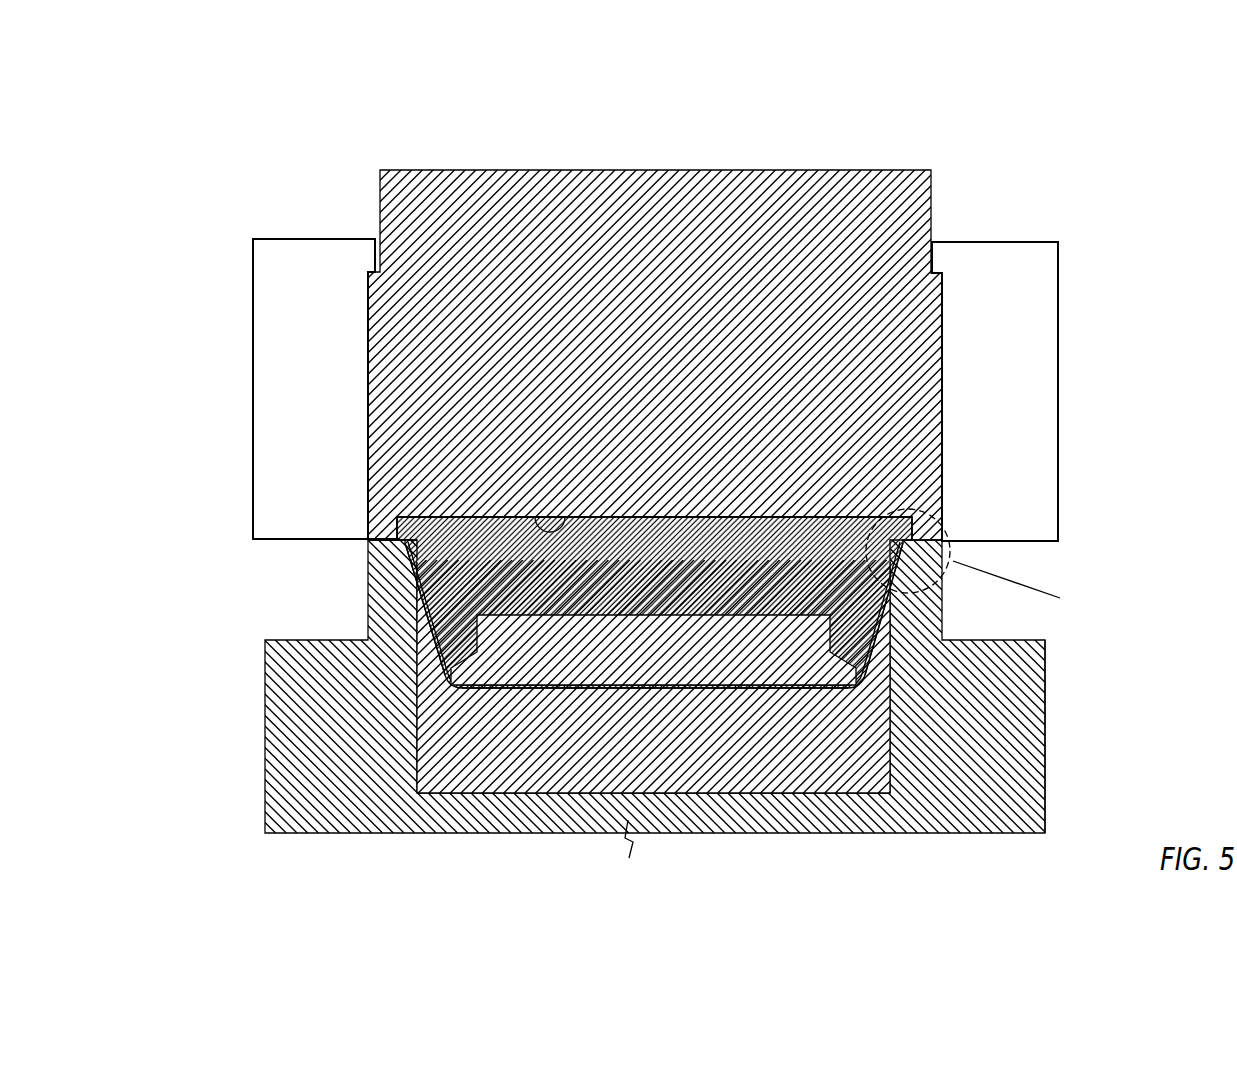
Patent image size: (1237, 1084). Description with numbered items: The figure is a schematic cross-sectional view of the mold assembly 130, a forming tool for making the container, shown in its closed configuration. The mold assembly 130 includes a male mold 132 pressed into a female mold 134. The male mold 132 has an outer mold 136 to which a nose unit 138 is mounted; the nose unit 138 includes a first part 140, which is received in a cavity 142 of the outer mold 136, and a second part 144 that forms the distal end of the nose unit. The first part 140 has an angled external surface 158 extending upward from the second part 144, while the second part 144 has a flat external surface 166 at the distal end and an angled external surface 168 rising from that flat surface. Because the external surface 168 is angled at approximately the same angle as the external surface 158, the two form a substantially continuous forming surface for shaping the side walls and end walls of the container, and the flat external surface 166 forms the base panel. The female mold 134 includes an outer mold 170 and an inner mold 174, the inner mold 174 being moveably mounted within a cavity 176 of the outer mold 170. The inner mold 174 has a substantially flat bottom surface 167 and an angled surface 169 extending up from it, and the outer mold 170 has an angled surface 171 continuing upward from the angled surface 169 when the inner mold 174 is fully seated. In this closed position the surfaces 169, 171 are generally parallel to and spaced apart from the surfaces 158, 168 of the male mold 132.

The mold assembly 130 is at (618, 495).
The male mold 132 is at (612, 227).
The female mold 134 is at (618, 698).
The outer mold 136 is at (908, 368).
The nose unit 138 is at (589, 617).
The first part 140 is at (430, 530).
The cavity 142 is at (522, 514).
The second part 144 is at (447, 690).
The angled external surface 158 is at (420, 590).
The flat external surface 166 is at (646, 726).
The bottom surface 167 is at (510, 690).
The angled external surface 168 is at (893, 700).
The angled surface 169 is at (443, 616).
The outer mold 170 is at (1013, 780).
The angled surface 171 is at (405, 557).
The inner mold 174 is at (817, 752).
The cavity 176 is at (420, 745).